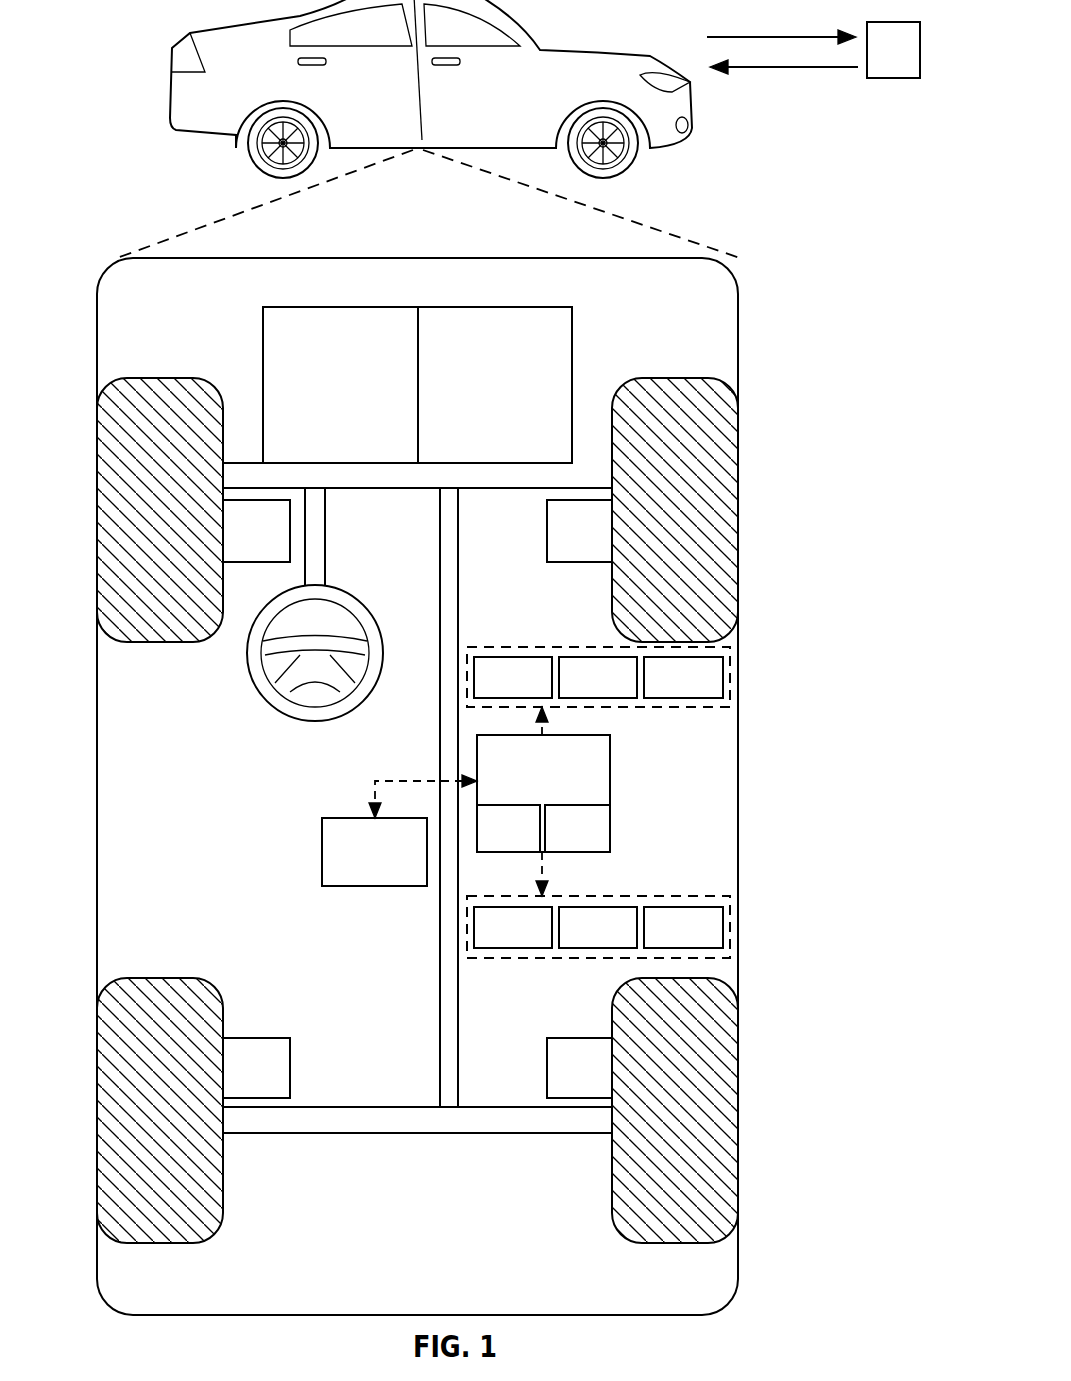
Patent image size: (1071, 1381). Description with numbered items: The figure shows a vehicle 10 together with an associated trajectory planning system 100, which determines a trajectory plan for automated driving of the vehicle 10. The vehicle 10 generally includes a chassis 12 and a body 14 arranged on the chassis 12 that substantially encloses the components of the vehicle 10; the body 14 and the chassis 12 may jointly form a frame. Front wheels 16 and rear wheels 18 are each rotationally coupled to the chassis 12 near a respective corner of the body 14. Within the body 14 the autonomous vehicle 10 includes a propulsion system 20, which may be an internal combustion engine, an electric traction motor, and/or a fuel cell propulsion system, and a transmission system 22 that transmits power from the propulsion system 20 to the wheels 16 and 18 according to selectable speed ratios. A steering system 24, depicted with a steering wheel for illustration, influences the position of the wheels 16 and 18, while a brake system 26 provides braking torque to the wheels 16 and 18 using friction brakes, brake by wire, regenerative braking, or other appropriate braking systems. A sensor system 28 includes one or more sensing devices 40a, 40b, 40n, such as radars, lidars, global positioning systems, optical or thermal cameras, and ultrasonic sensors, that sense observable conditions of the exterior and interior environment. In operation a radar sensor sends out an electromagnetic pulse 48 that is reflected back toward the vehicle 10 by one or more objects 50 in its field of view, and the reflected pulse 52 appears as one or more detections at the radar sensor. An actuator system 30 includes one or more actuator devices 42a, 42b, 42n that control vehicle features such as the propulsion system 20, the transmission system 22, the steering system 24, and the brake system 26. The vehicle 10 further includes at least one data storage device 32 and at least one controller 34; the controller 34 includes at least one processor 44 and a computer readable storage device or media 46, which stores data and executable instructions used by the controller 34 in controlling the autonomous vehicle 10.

The vehicle 10 is at (180, 65).
The trajectory planning system 100 is at (428, 768).
The chassis 12 is at (440, 968).
The body 14 is at (97, 738).
The front wheels 16 is at (160, 378).
The rear wheels 18 is at (160, 1243).
The propulsion system 20 is at (325, 397).
The transmission system 22 is at (477, 397).
The steering system 24 is at (337, 562).
The brake system 26 is at (242, 541).
The sensor system 28 is at (598, 660).
The actuator system 30 is at (598, 945).
The data storage device 32 is at (360, 866).
The controller 34 is at (543, 793).
The sensing device 40a is at (490, 692).
The sensing device 40b is at (575, 692).
The sensing device 40n is at (660, 692).
The actuator device 42a is at (490, 942).
The actuator device 42b is at (575, 942).
The actuator device 42n is at (660, 942).
The processor 44 is at (493, 842).
The computer readable storage device or media 46 is at (562, 842).
The electromagnetic pulse 48 is at (800, 37).
The object 50 is at (893, 22).
The reflected pulse 52 is at (780, 67).